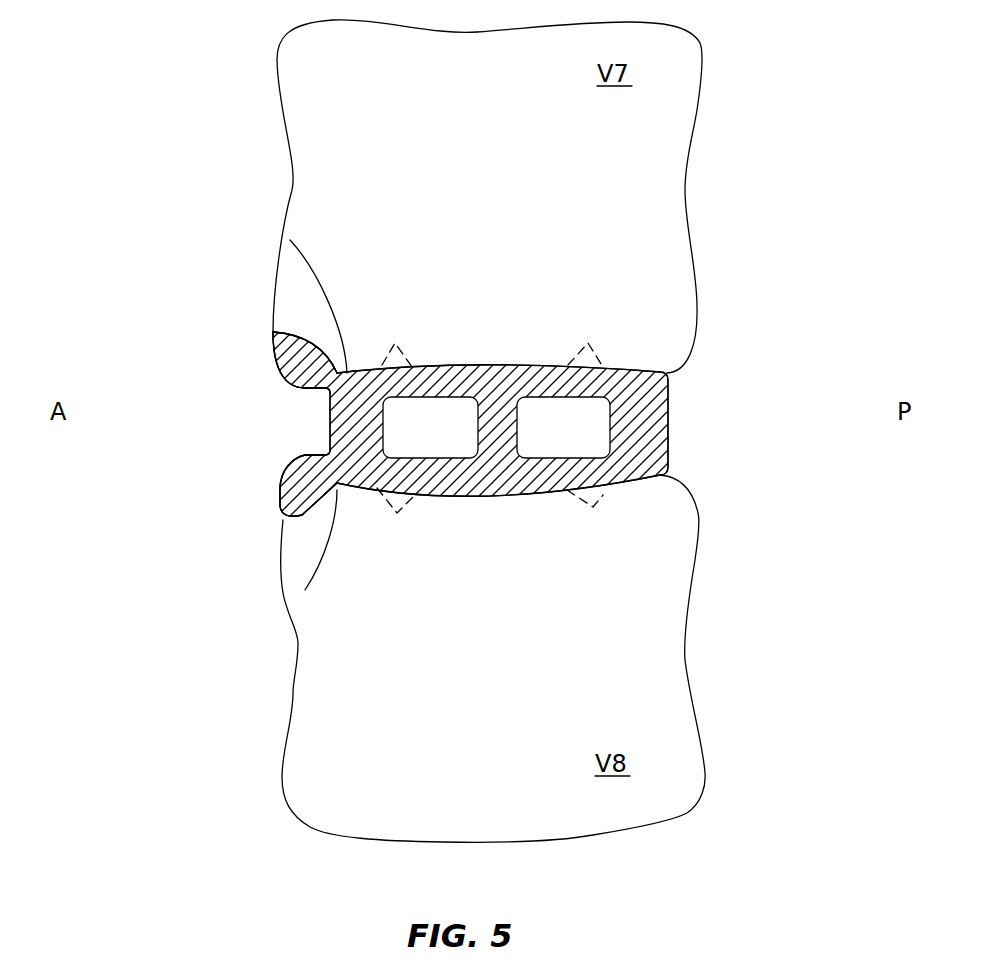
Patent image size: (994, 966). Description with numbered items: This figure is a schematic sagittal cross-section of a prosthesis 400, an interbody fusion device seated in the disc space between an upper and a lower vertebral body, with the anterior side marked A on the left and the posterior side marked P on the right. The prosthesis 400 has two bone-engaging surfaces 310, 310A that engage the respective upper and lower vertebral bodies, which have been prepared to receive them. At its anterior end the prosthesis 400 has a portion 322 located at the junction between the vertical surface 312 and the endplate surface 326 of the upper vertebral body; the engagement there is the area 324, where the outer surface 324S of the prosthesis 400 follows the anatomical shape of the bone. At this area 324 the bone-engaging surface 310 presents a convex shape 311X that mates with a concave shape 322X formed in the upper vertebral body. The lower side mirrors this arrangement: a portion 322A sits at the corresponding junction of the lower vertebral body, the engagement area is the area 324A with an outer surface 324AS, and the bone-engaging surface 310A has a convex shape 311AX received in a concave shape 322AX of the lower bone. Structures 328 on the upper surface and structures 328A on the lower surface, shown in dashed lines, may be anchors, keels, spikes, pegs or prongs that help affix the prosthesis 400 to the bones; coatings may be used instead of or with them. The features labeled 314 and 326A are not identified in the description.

The bone-engaging surface 310 is at (290, 240).
The bone-engaging surface 310A is at (305, 590).
The convex shape 311X is at (315, 342).
The convex shape 311AX is at (303, 518).
The vertical surface 312 is at (280, 130).
The posterior portion of upper vertebral body 314 is at (690, 175).
The portion 322 is at (290, 376).
The concave shape 322X is at (300, 392).
The concave shape 322AX is at (297, 462).
The portion 322A is at (295, 476).
The area 324 is at (248, 362).
The area 324A is at (256, 483).
The outer surface 324S is at (272, 347).
The outer surface 324AS is at (278, 500).
The endplate surface 326 is at (667, 385).
The lower surface of plate 326A is at (667, 471).
The structures 328 is at (592, 345).
The structures 328A is at (593, 507).
The prosthesis 400 is at (692, 405).